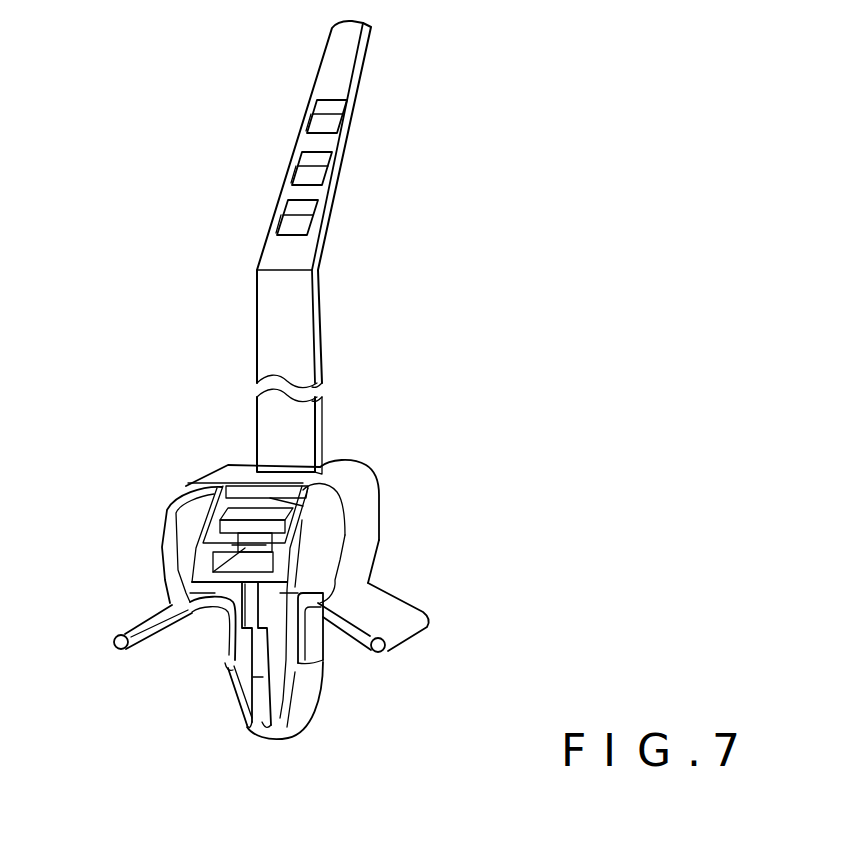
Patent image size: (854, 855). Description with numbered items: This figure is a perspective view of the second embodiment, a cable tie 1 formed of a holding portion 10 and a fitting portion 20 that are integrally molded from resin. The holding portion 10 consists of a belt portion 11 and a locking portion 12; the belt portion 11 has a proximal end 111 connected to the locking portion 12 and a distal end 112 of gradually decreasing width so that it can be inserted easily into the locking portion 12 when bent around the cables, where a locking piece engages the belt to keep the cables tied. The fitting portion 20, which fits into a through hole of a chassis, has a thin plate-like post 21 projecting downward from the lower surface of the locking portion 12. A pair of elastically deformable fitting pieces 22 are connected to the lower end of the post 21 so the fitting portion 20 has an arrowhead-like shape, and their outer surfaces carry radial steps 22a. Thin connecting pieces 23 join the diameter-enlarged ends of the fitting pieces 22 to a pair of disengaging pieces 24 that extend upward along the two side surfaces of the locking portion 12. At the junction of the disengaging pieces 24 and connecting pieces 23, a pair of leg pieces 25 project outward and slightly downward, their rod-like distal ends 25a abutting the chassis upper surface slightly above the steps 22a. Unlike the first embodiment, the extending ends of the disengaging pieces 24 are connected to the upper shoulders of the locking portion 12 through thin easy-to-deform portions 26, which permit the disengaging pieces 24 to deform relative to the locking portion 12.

The cable tie 1 is at (322, 247).
The holding portion 10 is at (302, 247).
The belt portion 11 is at (262, 358).
The proximal end 111 is at (265, 427).
The distal end 112 is at (315, 113).
The locking portion 12 is at (320, 483).
The fitting portion 20 is at (288, 569).
The post 21 is at (257, 697).
The fitting pieces 22 is at (258, 698).
The steps 22a is at (226, 670).
The connecting pieces 23 is at (230, 633).
The disengaging pieces 24 is at (172, 553).
The leg pieces 25 is at (272, 629).
The distal ends 25a is at (382, 652).
The easy-to-deform portions 26 is at (348, 480).